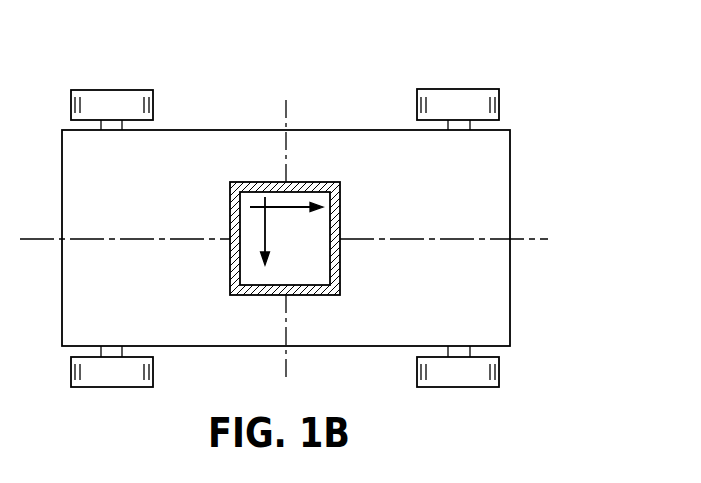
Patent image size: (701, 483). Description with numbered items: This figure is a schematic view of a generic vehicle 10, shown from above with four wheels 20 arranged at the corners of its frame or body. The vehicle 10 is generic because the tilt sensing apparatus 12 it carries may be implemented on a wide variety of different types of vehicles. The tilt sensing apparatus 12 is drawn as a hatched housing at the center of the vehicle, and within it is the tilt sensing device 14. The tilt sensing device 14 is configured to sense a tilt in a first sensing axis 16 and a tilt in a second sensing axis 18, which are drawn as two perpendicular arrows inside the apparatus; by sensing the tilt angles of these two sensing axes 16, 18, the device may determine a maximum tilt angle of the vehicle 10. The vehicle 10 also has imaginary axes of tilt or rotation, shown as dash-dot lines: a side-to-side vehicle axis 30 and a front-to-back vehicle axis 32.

The vehicle 10 is at (258, 81).
The tilt sensing apparatus 12 is at (322, 180).
The tilt sensing device 14 is at (322, 228).
The first sensing axis 16 is at (280, 203).
The second sensing axis 18 is at (278, 211).
The wheels 20 is at (117, 102).
The side-to-side vehicle axis 30 is at (287, 363).
The front-to-back vehicle axis 32 is at (535, 238).